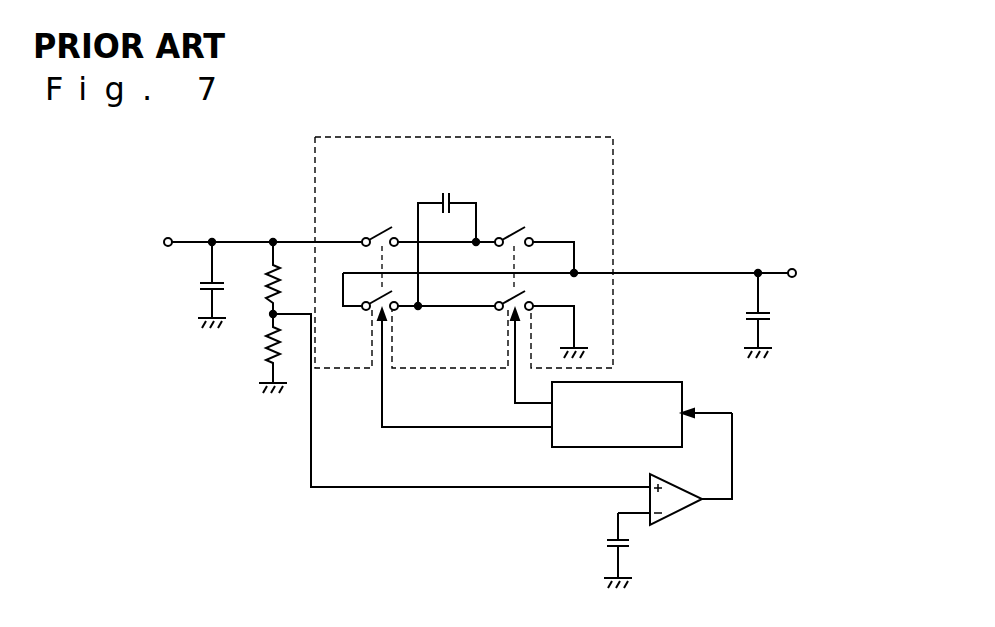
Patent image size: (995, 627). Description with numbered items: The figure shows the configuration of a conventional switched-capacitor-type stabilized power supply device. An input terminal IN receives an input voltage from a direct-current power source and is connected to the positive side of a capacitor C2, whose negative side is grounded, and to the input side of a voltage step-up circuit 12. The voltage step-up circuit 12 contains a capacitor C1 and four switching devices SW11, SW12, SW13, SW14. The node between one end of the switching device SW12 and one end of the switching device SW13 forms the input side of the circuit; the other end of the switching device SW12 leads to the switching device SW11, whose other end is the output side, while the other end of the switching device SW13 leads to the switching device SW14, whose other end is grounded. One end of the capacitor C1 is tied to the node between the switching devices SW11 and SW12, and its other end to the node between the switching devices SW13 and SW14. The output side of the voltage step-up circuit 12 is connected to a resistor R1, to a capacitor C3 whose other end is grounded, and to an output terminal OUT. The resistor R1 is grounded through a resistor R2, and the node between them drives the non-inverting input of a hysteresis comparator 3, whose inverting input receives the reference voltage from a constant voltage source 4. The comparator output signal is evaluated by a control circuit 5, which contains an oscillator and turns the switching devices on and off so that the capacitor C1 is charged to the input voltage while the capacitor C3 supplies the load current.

The voltage step-up circuit 12 is at (548, 135).
The control circuit 5 is at (656, 381).
The comparator 3 is at (686, 511).
The constant voltage source 4 is at (632, 546).
The capacitor C1 is at (448, 190).
The capacitor C2 is at (772, 318).
The capacitor C3 is at (200, 287).
The resistor R1 is at (262, 288).
The resistor R2 is at (264, 340).
The switching device SW11 is at (371, 235).
The switching device SW12 is at (532, 234).
The switching device SW13 is at (365, 315).
The switching device SW14 is at (498, 315).
The output terminal OUT is at (168, 238).
The input terminal IN is at (792, 269).